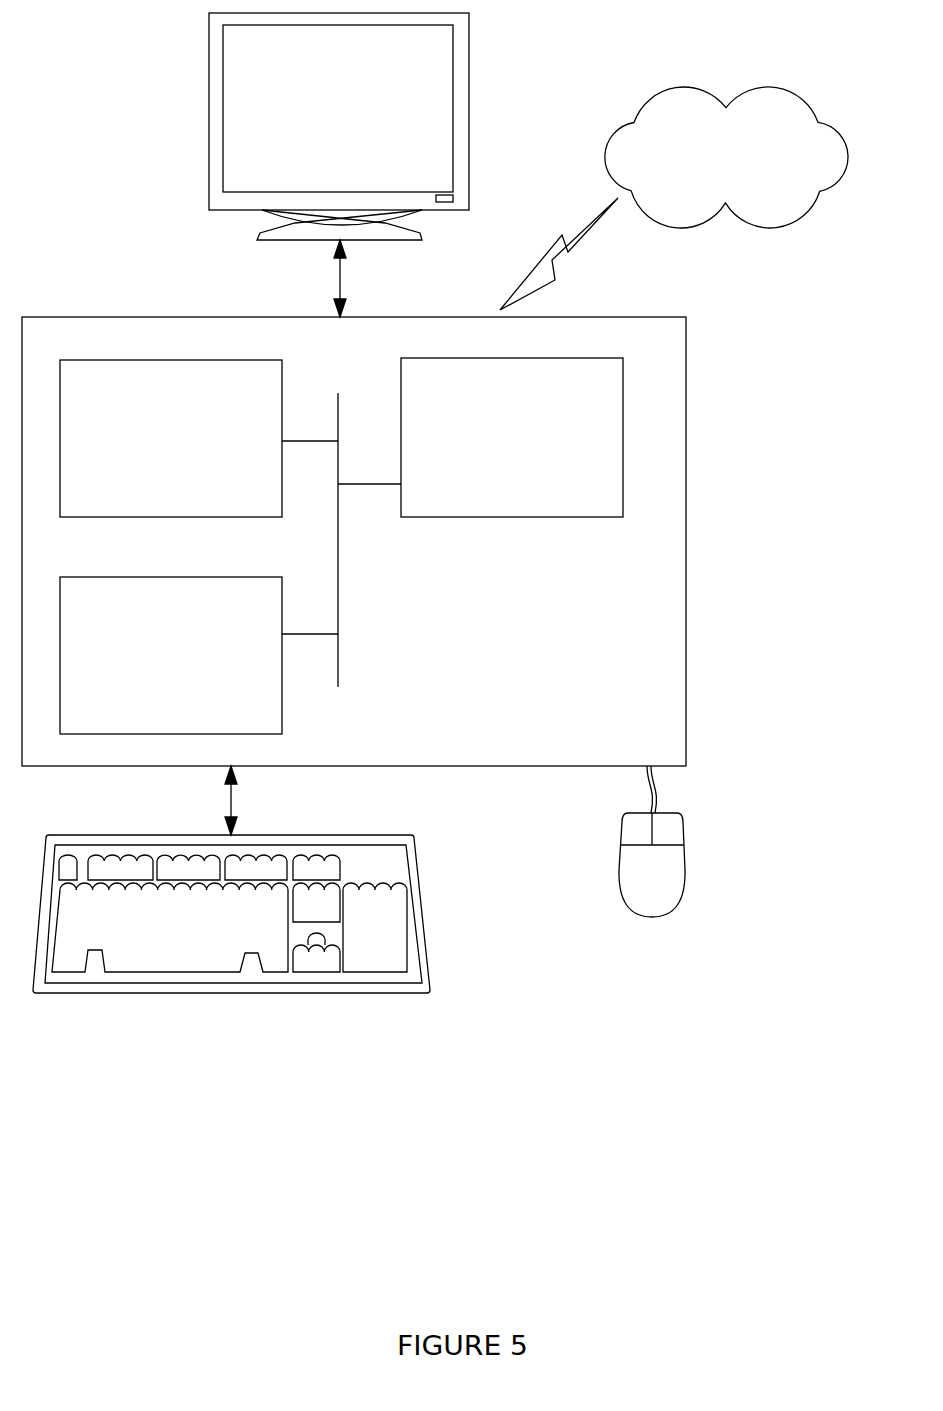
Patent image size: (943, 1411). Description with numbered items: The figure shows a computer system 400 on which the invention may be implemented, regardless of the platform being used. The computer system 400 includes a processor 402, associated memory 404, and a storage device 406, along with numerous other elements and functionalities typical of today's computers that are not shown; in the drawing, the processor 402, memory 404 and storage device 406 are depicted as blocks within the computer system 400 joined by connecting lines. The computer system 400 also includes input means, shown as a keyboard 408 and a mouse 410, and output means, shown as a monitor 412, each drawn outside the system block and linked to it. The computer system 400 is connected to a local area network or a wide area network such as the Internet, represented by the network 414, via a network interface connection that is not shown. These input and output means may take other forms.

The computer system 400 is at (737, 328).
The processor 402 is at (508, 450).
The memory 404 is at (150, 450).
The storage device 406 is at (148, 667).
The keyboard 408 is at (141, 952).
The mouse 410 is at (630, 887).
The monitor 412 is at (318, 133).
The network 414 is at (703, 175).